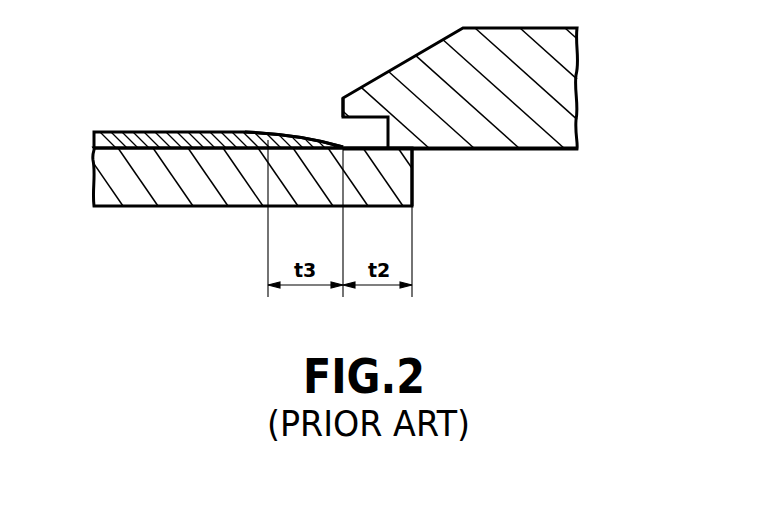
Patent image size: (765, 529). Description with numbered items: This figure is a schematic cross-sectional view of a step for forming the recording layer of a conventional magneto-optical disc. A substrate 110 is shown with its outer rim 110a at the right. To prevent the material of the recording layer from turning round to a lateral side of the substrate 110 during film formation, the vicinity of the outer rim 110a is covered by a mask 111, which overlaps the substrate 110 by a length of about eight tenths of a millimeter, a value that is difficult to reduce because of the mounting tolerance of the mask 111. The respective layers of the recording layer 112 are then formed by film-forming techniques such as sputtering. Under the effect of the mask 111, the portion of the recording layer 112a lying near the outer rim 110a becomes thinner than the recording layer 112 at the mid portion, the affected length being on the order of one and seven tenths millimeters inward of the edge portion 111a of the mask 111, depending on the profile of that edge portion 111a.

The substrate 110 is at (193, 183).
The outer rim 110a is at (412, 176).
The mask 111 is at (563, 123).
The edge portion 111a is at (343, 108).
The recording layer 112 is at (180, 132).
The recording layer portion 112a is at (312, 116).